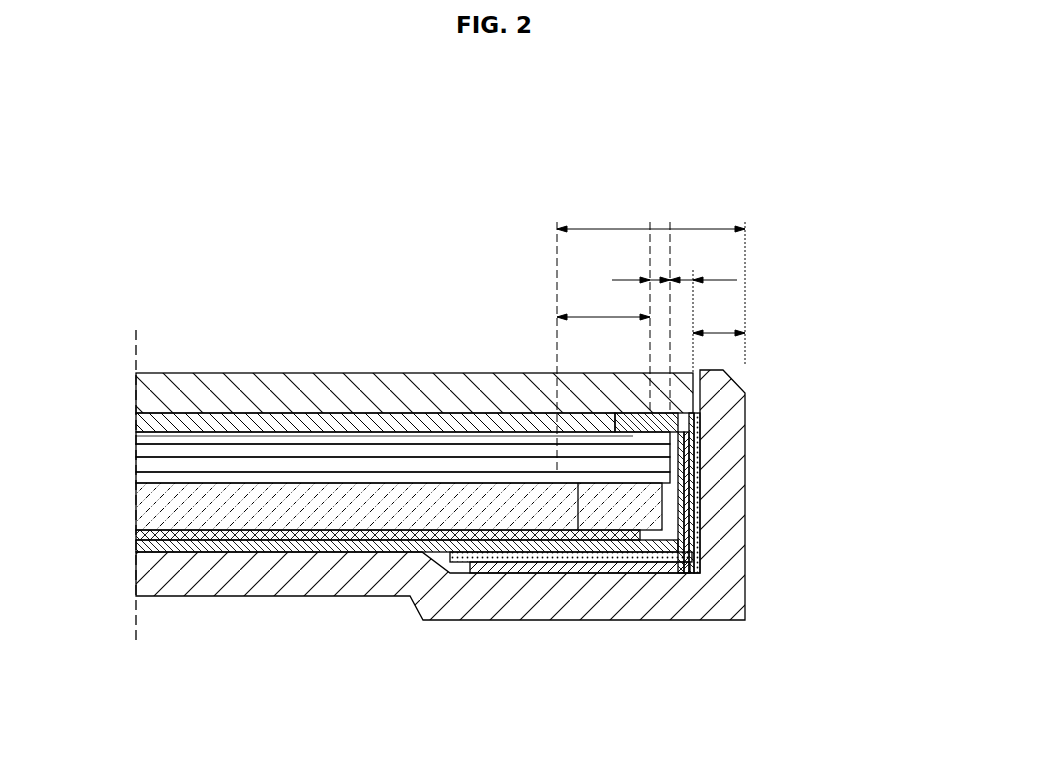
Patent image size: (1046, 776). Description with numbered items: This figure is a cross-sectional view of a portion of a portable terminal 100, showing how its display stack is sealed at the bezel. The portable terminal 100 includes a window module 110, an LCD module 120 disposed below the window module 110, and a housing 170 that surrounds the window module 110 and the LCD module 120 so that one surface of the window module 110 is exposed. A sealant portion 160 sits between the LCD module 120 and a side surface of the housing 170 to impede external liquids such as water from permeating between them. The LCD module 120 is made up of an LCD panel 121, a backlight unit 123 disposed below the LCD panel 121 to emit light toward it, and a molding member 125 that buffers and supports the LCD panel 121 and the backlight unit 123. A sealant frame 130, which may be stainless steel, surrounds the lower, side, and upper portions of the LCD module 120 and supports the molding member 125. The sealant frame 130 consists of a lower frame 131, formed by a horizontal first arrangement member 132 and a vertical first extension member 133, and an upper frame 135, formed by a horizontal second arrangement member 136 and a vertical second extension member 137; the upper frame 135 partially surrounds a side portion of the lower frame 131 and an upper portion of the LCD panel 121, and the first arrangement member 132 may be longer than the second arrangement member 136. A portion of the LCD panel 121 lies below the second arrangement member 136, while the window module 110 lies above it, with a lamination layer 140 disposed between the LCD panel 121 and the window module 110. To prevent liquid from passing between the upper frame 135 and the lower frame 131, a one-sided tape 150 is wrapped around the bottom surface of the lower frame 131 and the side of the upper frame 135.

The portable terminal 100 is at (516, 122).
The window module 110 is at (478, 373).
The LCD module 120 is at (371, 435).
The LCD panel 121 is at (317, 462).
The backlight unit 123 is at (385, 502).
The molding member 125 is at (635, 432).
The sealant frame 130 is at (806, 493).
The lower frame 131 is at (778, 502).
The first arrangement member 132 is at (685, 548).
The first extension member 133 is at (690, 505).
The upper frame 135 is at (783, 493).
The second arrangement member 136 is at (700, 445).
The second extension member 137 is at (695, 470).
The lamination layer 140 is at (585, 426).
The one-sided tape 150 is at (642, 562).
The sealant portion 160 is at (560, 575).
The housing 170 is at (750, 406).